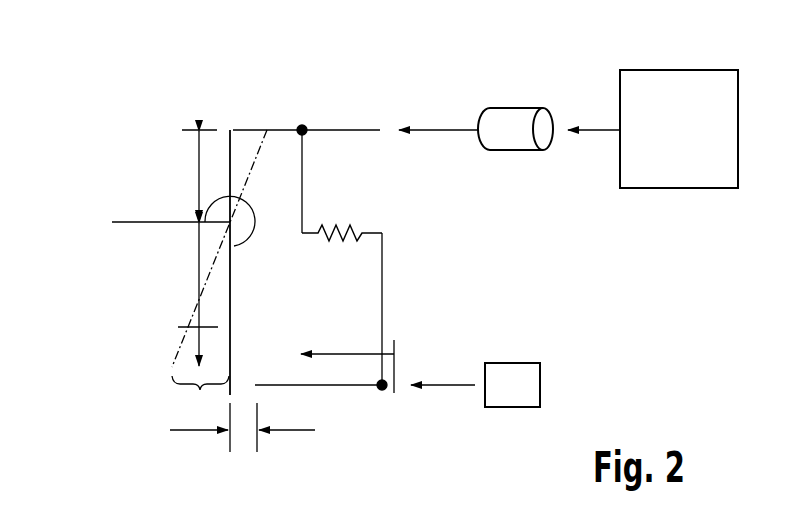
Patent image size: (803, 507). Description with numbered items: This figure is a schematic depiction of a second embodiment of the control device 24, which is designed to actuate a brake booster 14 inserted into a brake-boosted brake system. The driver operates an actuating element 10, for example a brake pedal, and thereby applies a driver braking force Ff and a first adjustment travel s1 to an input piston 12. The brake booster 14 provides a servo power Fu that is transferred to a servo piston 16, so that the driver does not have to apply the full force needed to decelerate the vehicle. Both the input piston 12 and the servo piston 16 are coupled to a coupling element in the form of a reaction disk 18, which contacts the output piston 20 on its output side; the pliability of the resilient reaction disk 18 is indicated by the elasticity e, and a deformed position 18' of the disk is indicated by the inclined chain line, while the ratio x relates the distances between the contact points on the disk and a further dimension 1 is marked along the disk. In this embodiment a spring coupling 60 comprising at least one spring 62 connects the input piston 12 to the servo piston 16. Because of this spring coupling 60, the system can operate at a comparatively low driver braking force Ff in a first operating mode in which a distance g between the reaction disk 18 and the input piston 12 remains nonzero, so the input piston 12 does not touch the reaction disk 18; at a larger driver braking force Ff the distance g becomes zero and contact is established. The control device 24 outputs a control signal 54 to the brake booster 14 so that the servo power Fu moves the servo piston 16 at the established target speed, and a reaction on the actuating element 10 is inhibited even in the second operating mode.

The lever displacement dimension 1 is at (198, 277).
The actuating element 10 is at (512, 407).
The input piston 12 is at (347, 385).
The brake booster 14 is at (517, 108).
The servo piston 16 is at (328, 130).
The reaction disk 18 is at (267, 262).
The tilted lever position 18' is at (184, 251).
The output piston 20 is at (120, 222).
The control device 24 is at (668, 70).
The control signal 54 is at (590, 130).
The spring coupling 60 is at (382, 262).
The spring 62 is at (355, 225).
The servo power Fu is at (440, 130).
The driver braking force Ff is at (445, 385).
The first adjustment travel s1 is at (340, 354).
The quotient/area ratio x is at (199, 170).
The elasticity e is at (240, 221).
The distance between reaction disk and input piston g is at (288, 432).